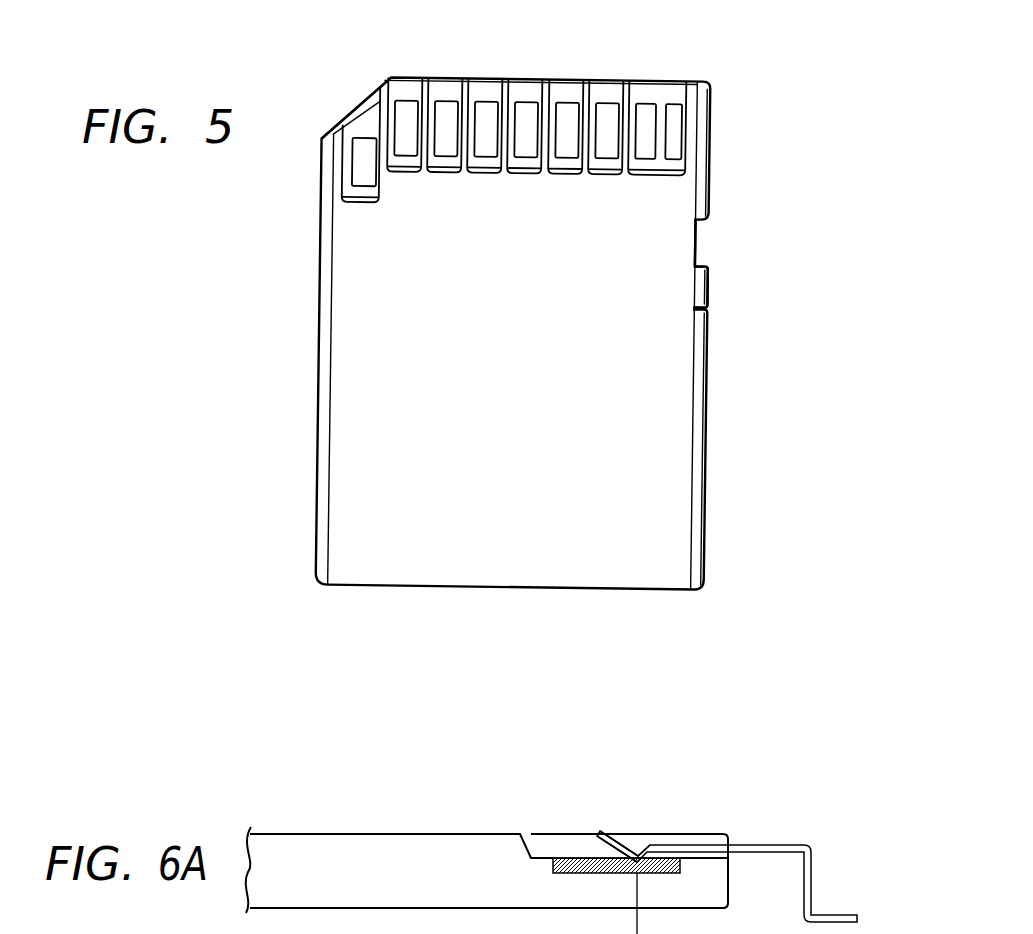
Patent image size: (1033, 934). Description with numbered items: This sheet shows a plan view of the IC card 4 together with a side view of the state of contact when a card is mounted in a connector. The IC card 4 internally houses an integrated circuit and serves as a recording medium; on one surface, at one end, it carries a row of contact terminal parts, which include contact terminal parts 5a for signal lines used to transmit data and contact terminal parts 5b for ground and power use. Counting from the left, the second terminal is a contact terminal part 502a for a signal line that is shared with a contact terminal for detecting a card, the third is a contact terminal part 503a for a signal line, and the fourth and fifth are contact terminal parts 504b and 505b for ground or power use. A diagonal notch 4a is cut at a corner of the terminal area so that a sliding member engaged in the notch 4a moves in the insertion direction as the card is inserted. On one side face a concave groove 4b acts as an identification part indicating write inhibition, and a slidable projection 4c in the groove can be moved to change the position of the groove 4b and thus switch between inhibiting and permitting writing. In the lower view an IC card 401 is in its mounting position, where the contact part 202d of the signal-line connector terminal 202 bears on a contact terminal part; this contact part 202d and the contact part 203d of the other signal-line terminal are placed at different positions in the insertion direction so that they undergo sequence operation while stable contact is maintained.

In FIG. 5, the IC card 4 is at (315, 461).
In FIG. 5, the diagonal notch 4a is at (356, 106).
In FIG. 5, the concave groove 4b is at (701, 240).
In FIG. 5, the slidable projection 4c is at (702, 286).
In FIG. 5, the contact terminal part for signal line 5a is at (365, 180).
In FIG. 5, the contact terminal part for ground and power use 5b is at (608, 143).
In FIG. 5, the contact terminal part for signal line 502a is at (405, 104).
In FIG. 6A, the contact terminal part for signal line 502a is at (563, 858).
In FIG. 5, the contact terminal part for signal line 503a is at (443, 150).
In FIG. 6A, the contact terminal part for signal line 503a is at (550, 933).
In FIG. 5, the contact terminal part for ground or power use 504b is at (485, 104).
In FIG. 5, the contact terminal part for ground or power use 505b is at (526, 148).
In FIG. 6A, the IC card 401 is at (282, 830).
In FIG. 6A, the connector terminal for signal line 202 is at (813, 889).
In FIG. 6A, the contact part 202d is at (637, 851).
In FIG. 6A, the contact part 203d is at (613, 933).